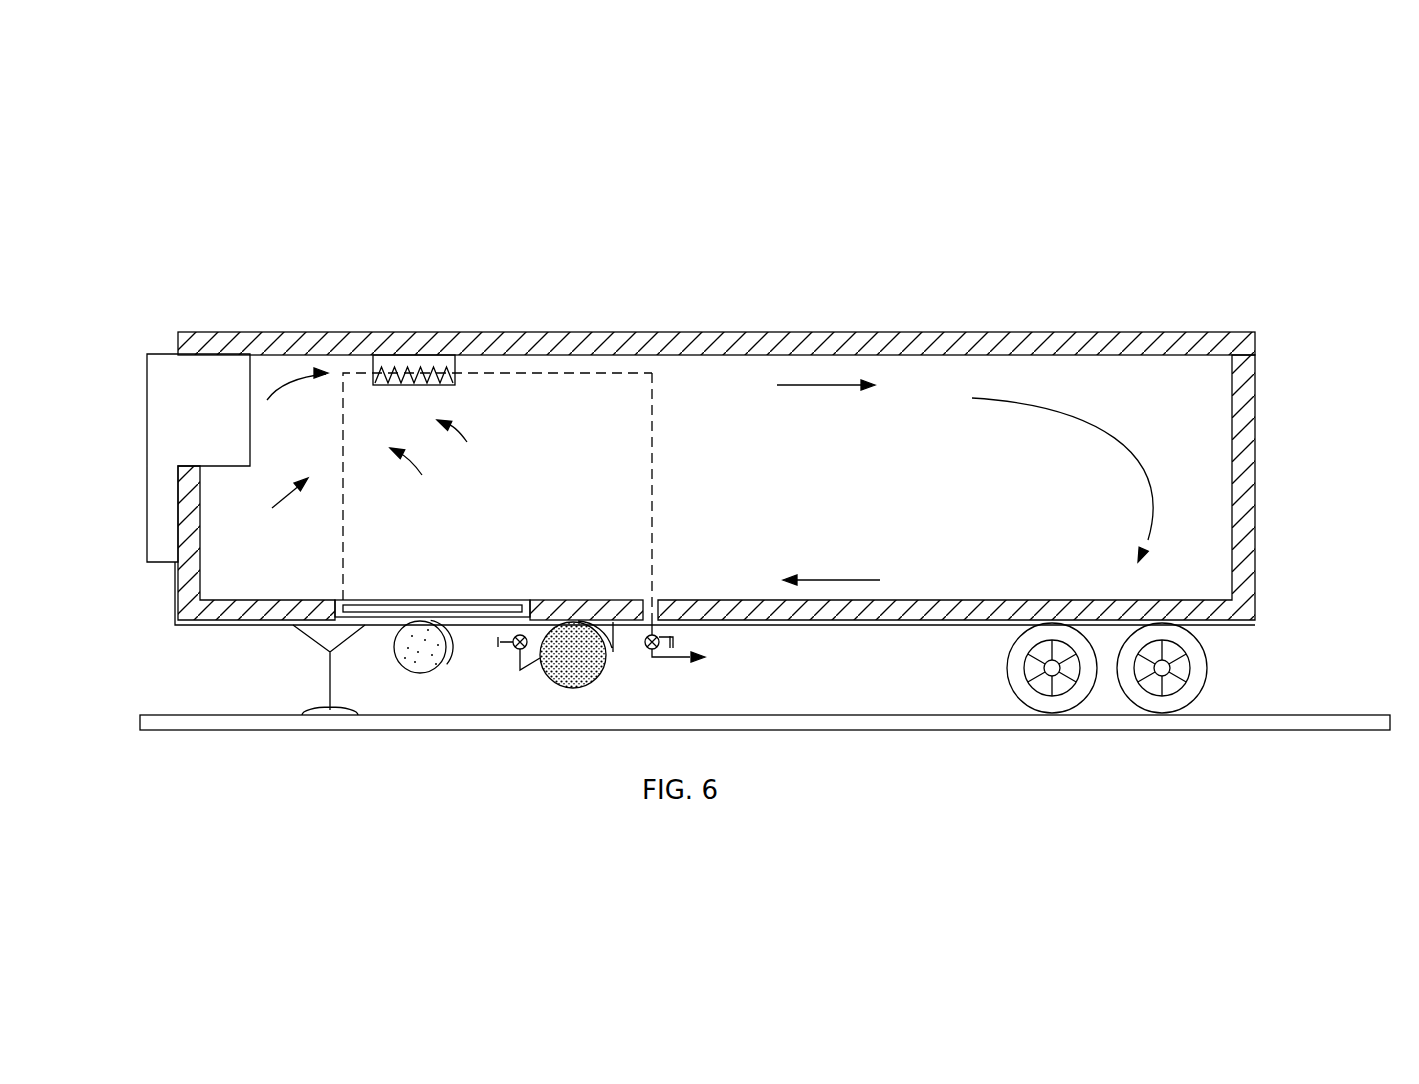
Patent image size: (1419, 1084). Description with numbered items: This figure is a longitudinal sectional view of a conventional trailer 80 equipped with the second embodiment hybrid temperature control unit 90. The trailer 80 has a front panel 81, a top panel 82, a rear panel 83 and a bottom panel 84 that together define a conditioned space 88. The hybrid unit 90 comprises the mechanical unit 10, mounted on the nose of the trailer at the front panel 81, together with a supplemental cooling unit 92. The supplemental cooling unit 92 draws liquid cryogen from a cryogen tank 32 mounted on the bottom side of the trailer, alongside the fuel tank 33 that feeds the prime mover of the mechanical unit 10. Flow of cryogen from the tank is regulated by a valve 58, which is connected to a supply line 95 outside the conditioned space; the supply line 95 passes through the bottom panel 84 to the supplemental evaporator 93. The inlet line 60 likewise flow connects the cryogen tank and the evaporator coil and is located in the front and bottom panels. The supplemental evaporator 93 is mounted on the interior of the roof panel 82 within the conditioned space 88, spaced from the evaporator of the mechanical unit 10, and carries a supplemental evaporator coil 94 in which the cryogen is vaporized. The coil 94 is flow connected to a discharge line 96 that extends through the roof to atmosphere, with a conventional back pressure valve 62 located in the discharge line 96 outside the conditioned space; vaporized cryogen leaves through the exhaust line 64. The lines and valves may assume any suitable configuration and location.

The mechanical unit 10 is at (118, 411).
The cryogen tank 32 is at (614, 684).
The fuel tank 33 is at (410, 667).
The valve 58 is at (517, 650).
The inlet line 60 is at (370, 612).
The back pressure valve 62 is at (676, 642).
The exhaust line 64 is at (672, 658).
The trailer 80 is at (1195, 305).
The front panel 81 is at (185, 503).
The top panel 82 is at (655, 332).
The rear panel 83 is at (1255, 445).
The bottom panel 84 is at (945, 602).
The conditioned space 88 is at (867, 497).
The second embodiment hybrid temperature control unit 90 is at (424, 472).
The supplemental cooling unit 92 is at (286, 452).
The supplemental evaporator 93 is at (469, 444).
The supplemental evaporator coil 94 is at (455, 385).
The supply line 95 is at (343, 520).
The discharge line 96 is at (653, 464).